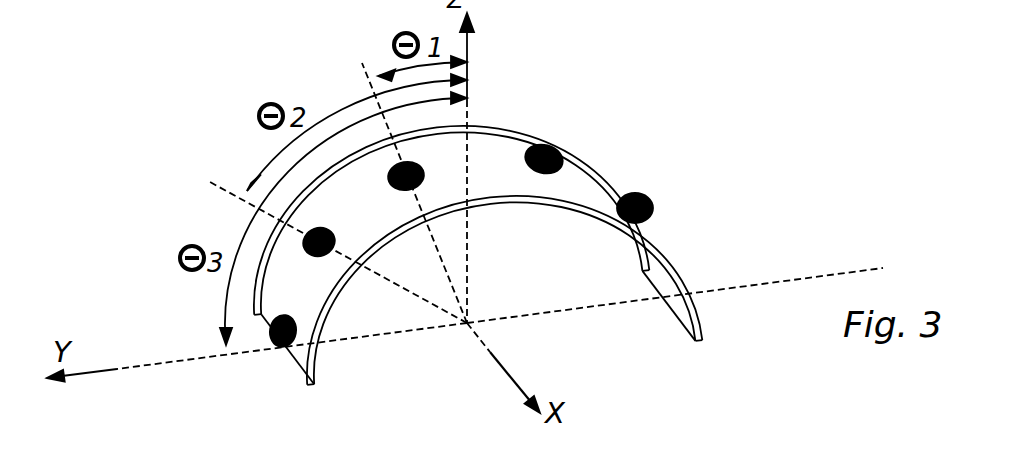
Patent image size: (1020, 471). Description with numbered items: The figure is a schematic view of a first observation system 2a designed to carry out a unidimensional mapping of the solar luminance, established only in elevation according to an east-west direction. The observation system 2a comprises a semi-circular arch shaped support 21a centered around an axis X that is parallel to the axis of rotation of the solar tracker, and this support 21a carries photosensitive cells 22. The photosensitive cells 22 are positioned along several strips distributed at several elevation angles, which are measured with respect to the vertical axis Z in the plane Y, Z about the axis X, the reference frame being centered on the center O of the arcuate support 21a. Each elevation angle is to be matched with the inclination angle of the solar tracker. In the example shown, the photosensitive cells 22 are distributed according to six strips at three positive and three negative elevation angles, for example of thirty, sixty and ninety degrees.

The observation system 2a is at (700, 145).
The semi-circular arch shaped support 21a is at (575, 180).
The photosensitive cells 22 is at (653, 205).